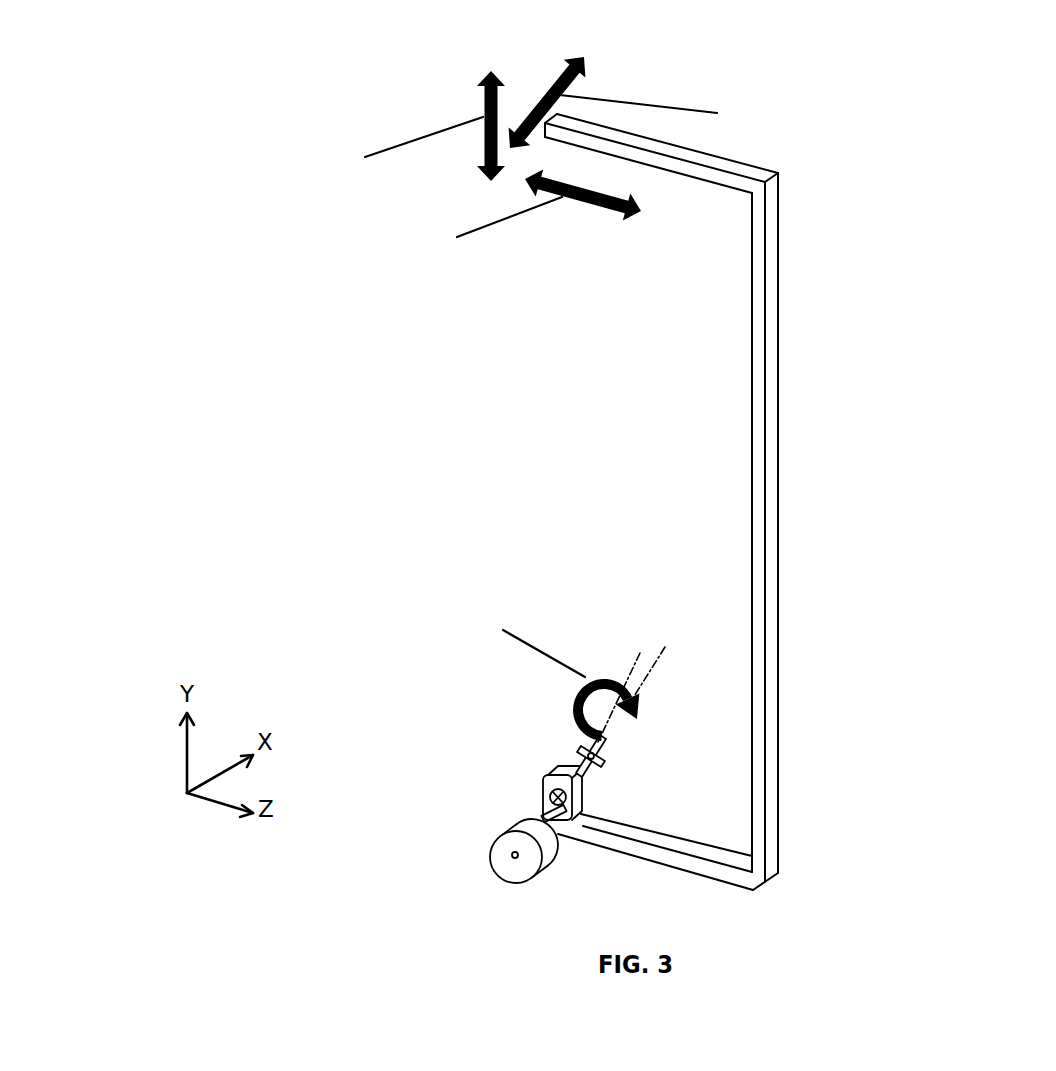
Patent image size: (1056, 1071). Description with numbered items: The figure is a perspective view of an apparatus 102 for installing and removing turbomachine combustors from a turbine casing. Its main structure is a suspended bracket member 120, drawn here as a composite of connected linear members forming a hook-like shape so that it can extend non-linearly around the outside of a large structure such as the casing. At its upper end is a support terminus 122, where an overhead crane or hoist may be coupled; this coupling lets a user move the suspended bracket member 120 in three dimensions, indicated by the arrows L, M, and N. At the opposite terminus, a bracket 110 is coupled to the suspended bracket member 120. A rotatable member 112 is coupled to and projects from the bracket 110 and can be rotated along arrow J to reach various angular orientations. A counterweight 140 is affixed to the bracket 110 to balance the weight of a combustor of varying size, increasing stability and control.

The apparatus 102 is at (677, 473).
The bracket 110 is at (552, 777).
The rotatable member 112 is at (582, 767).
The suspended bracket member 120 is at (742, 502).
The support terminus 122 is at (560, 133).
The counterweight 140 is at (530, 825).